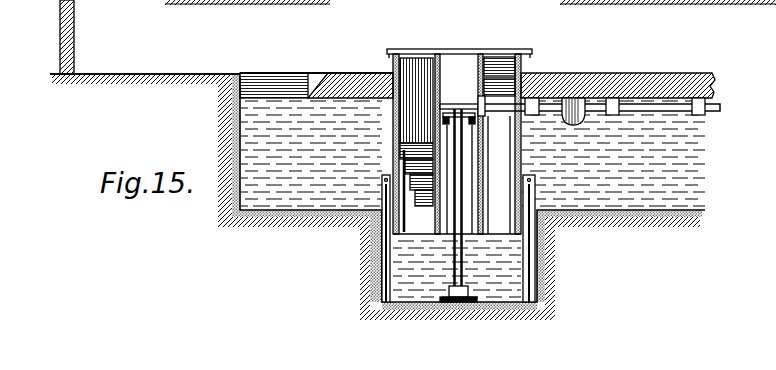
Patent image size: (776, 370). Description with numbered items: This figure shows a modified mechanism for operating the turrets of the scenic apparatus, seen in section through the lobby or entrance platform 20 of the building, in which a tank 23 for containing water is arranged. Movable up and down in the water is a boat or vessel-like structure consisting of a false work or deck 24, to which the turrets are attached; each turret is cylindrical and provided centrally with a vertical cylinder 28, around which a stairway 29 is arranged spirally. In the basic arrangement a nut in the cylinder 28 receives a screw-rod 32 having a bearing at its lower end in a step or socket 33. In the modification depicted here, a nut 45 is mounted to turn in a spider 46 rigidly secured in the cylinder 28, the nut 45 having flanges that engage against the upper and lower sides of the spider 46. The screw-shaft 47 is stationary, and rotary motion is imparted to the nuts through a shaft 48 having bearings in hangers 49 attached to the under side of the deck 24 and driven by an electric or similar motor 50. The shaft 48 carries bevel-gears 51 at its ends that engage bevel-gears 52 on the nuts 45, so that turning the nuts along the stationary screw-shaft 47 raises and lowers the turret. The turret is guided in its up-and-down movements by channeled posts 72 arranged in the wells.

The lobby or entrance platform 20 is at (112, 73).
The tank 23 is at (246, 73).
The false work or deck 24 is at (658, 73).
The vertical cylinder 28 is at (448, 50).
The stairway 29 is at (498, 65).
The screw-rod 32 is at (192, 0).
The step or socket 33 is at (250, 0).
The nut 45 is at (475, 150).
The spider 46 is at (477, 125).
The screw-shaft 47 is at (522, 266).
The shaft 48 is at (716, 107).
The hangers 49 is at (700, 116).
The motor 50 is at (583, 105).
The bevel-gears 51 is at (481, 105).
The bevel-gears 52 is at (450, 107).
The channeled posts 72 is at (537, 190).